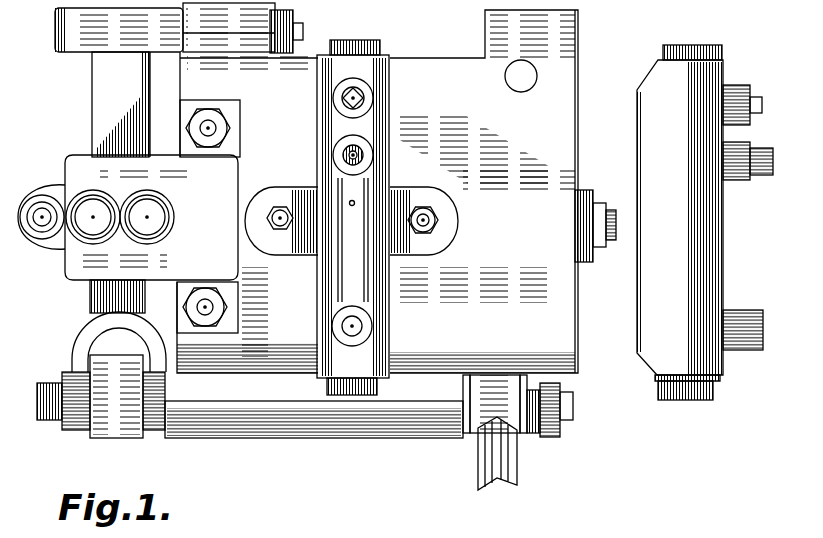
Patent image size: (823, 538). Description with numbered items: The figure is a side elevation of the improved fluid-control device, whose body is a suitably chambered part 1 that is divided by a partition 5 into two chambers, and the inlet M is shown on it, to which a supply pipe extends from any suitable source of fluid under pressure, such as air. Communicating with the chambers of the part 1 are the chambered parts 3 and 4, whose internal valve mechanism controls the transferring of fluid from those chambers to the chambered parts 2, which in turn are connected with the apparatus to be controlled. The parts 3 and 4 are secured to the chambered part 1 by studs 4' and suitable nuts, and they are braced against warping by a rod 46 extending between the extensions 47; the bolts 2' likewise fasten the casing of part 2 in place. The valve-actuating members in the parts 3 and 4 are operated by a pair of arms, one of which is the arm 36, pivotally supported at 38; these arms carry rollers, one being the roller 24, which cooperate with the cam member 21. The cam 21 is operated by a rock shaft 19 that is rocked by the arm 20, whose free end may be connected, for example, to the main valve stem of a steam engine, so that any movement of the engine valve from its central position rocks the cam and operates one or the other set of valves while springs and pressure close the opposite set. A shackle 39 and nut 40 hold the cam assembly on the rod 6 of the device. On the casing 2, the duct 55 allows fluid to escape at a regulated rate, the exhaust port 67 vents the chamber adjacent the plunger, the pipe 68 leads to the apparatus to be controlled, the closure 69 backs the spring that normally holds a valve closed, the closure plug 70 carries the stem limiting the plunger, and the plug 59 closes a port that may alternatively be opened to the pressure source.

The chambered part 1 is at (574, 338).
The chambered parts 2 is at (504, 218).
The clamping bolts 2' is at (447, 209).
The chambered part 3 is at (40, 217).
The chambered part 4 is at (128, 158).
The studs 4' is at (193, 207).
The partition 5 is at (370, 27).
The rod 6 is at (207, 425).
The rock shaft 19 is at (571, 414).
The arm 20 is at (490, 470).
The cam member 21 is at (133, 438).
The roller 24 is at (113, 407).
The arm 36 is at (100, 96).
The pivot support 38 is at (58, 40).
The shackle 39 is at (82, 341).
The nut 40 is at (40, 402).
The rod 46 is at (42, 208).
The extensions 47 is at (63, 185).
The duct 55 is at (352, 337).
The plug 59 is at (364, 100).
The exhaust port 67 is at (352, 206).
The pipe 68 is at (352, 166).
The closure 69 is at (380, 50).
The closure plug 70 is at (337, 383).
The inlet port M is at (522, 73).